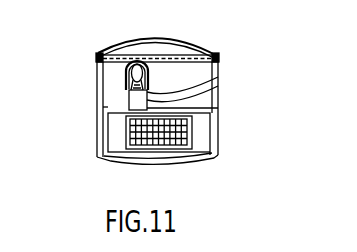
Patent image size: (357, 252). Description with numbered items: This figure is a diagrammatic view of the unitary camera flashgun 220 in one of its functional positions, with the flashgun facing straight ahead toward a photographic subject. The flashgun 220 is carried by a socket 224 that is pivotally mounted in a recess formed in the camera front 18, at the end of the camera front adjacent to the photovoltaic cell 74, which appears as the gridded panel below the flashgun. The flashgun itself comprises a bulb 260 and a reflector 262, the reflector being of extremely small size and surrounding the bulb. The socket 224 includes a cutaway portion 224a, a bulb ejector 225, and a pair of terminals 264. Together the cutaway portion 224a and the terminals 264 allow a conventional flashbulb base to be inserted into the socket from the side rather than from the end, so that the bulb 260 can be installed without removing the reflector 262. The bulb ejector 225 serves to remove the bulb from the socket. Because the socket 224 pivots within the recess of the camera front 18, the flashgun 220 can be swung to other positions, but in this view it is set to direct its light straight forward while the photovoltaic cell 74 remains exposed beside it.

The camera front 18 is at (213, 150).
The photovoltaic cell 74 is at (190, 133).
The flashgun 220 is at (172, 84).
The socket 224 is at (218, 86).
The cutaway portion 224a is at (218, 77).
The bulb ejector 225 is at (218, 108).
The bulb 260 is at (127, 71).
The reflector 262 is at (148, 67).
The terminals 264 is at (129, 98).